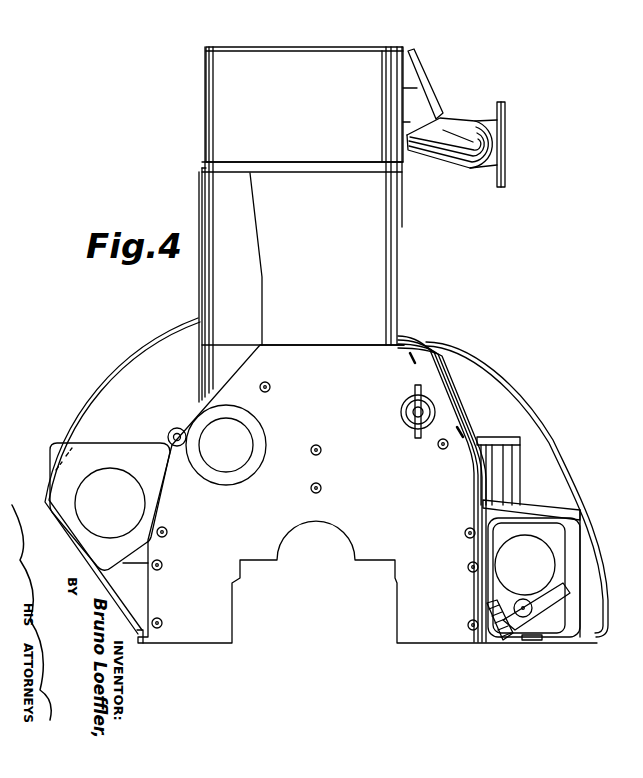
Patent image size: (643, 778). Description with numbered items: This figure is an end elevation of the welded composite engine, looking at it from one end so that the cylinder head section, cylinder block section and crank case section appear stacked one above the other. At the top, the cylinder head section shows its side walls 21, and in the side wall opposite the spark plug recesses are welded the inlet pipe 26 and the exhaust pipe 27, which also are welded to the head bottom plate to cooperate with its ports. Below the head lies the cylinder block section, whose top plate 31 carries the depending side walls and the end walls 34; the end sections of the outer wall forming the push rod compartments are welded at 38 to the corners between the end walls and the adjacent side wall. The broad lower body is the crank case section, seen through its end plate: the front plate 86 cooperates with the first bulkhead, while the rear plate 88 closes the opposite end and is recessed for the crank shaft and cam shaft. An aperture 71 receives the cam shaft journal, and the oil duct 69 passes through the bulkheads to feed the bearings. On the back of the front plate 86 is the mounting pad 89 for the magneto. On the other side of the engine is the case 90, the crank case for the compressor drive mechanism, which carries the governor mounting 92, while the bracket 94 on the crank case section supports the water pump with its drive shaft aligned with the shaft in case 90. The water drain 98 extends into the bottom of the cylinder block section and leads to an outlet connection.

The side walls 21 is at (223, 110).
The top plate 31 is at (227, 167).
The end walls 34 is at (378, 254).
The weld 38 is at (262, 278).
The exhaust pipe 27 is at (417, 103).
The inlet pipe 26 is at (450, 148).
The rear plate 88 is at (420, 597).
The water drain 98 is at (418, 337).
The front plate 86 is at (492, 365).
The oil duct 69 is at (421, 411).
The governor mounting 92 is at (505, 445).
The case 90 is at (577, 543).
The bracket 94 is at (553, 592).
The mounting pad 89 is at (82, 463).
The aligned apertures 71 is at (249, 432).